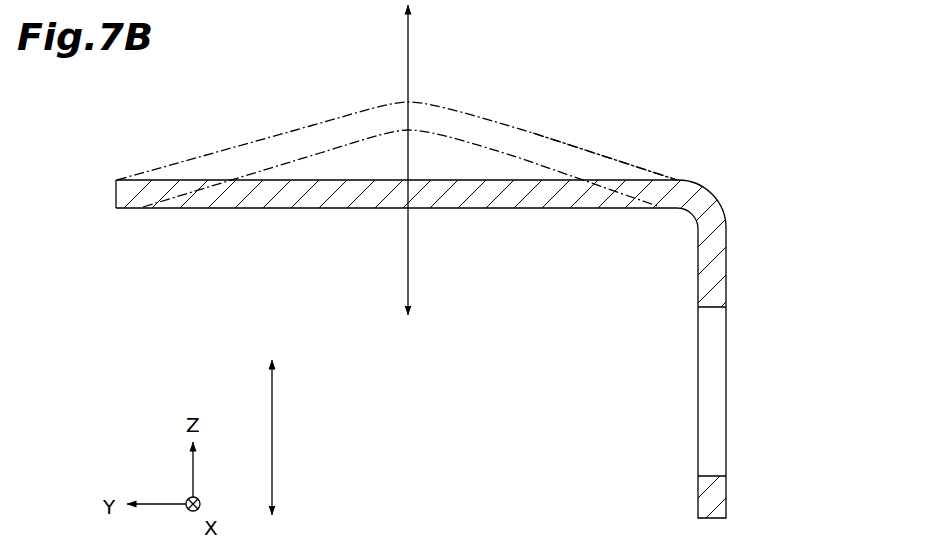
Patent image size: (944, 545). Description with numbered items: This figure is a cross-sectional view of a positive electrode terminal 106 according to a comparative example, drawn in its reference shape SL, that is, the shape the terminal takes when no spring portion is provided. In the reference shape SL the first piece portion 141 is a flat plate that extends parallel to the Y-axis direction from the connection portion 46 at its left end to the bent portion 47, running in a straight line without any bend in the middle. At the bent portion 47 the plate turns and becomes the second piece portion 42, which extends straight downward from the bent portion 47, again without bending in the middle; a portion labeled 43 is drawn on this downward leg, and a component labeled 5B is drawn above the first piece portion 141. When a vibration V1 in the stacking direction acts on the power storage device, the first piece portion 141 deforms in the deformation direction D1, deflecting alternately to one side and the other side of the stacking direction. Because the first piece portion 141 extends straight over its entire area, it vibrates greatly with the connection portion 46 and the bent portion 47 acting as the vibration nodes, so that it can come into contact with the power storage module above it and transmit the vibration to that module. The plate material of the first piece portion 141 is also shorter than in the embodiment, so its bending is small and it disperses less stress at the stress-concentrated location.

The positive electrode terminal 106 is at (472, 350).
The first piece portion 141 is at (471, 211).
The connection portion 46 is at (112, 177).
The bent portion 47 is at (709, 189).
The second piece portion 42 is at (739, 472).
The intermediate portion 43 is at (713, 309).
The cable 5B is at (304, 84).
The reference shape SL is at (611, 137).
The deformation direction D1 is at (405, 257).
The vibration V1 is at (275, 436).